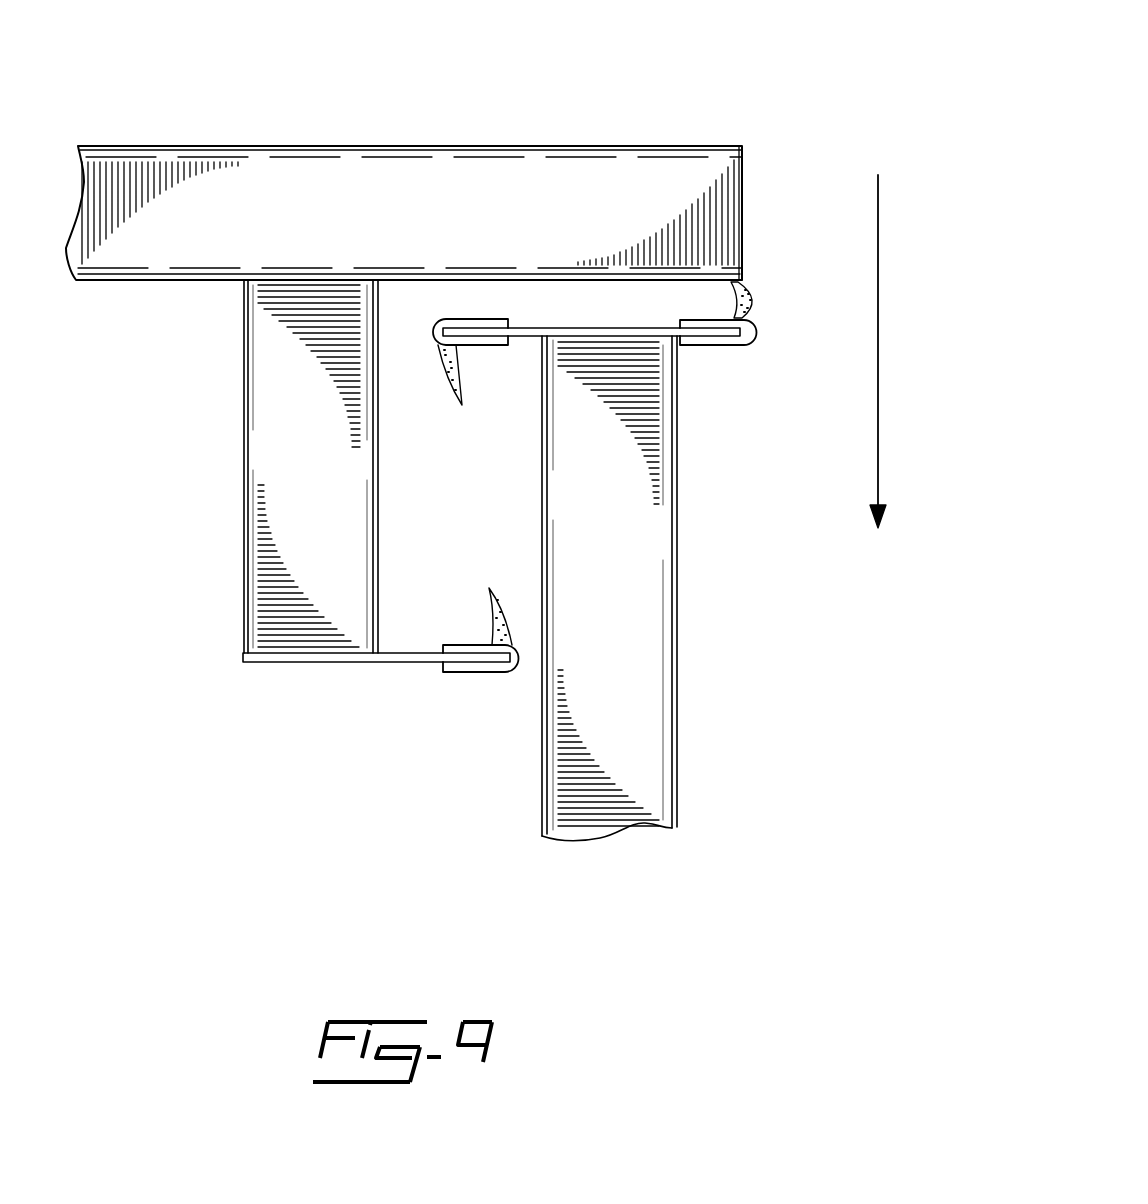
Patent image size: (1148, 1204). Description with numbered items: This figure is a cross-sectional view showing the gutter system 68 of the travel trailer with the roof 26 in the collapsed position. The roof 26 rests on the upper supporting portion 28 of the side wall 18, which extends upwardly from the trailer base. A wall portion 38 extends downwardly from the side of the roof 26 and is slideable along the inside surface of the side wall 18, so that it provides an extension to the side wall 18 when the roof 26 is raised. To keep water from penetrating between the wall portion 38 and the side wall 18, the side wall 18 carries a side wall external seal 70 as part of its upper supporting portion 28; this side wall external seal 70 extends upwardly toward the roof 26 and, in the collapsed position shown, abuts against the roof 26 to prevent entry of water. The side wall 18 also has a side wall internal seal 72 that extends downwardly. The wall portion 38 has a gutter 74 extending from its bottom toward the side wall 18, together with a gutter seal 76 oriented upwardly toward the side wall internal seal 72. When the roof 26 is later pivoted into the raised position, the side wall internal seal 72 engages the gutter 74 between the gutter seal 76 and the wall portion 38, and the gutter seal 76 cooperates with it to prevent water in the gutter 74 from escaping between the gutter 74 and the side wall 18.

The side wall 18 is at (638, 665).
The roof 26 is at (466, 188).
The upper supporting portion 28 is at (618, 330).
The wall portion 38 is at (287, 442).
The gutter system 68 is at (806, 112).
The side wall external seal 70 is at (757, 299).
The side wall internal seal 72 is at (447, 366).
The gutter 74 is at (410, 628).
The gutter seal 76 is at (497, 622).